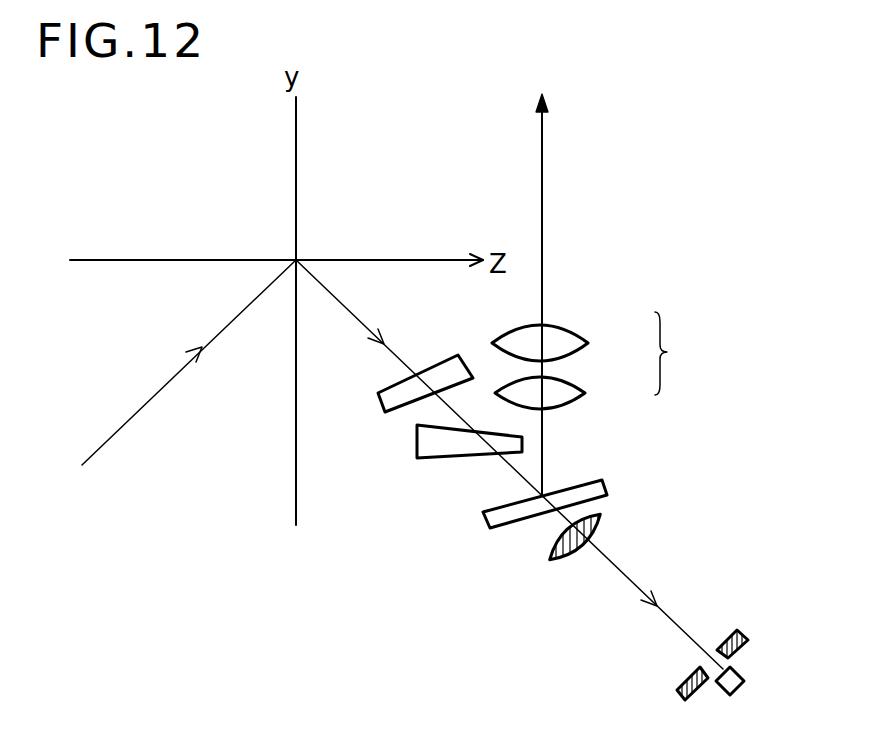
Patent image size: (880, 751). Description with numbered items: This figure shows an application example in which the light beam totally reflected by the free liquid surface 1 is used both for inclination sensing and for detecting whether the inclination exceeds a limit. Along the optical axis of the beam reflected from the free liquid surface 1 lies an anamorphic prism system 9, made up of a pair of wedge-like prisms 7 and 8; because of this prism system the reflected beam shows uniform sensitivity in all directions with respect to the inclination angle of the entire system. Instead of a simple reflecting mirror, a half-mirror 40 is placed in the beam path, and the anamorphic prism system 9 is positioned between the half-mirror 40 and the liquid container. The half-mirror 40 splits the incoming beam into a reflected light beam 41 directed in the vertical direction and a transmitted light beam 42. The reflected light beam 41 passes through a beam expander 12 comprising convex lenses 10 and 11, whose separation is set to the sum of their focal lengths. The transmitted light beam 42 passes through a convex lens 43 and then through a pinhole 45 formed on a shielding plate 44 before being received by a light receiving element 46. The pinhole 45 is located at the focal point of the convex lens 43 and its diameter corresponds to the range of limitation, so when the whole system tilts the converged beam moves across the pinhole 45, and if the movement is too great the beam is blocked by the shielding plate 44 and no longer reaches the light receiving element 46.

The free liquid surface 1 is at (117, 259).
The wedge-like prism 7 is at (441, 362).
The wedge-like prism 8 is at (443, 460).
The anamorphic prism system 9 is at (392, 424).
The convex lens 10 is at (585, 388).
The convex lens 11 is at (588, 338).
The beam expander 12 is at (667, 352).
The half-mirror 40 is at (607, 487).
The reflected light beam 41 is at (543, 170).
The transmitted light beam 42 is at (633, 581).
The convex lens 43 is at (603, 530).
The shielding plate 44 is at (677, 680).
The pinhole 45 is at (710, 661).
The light receiving element 46 is at (748, 673).